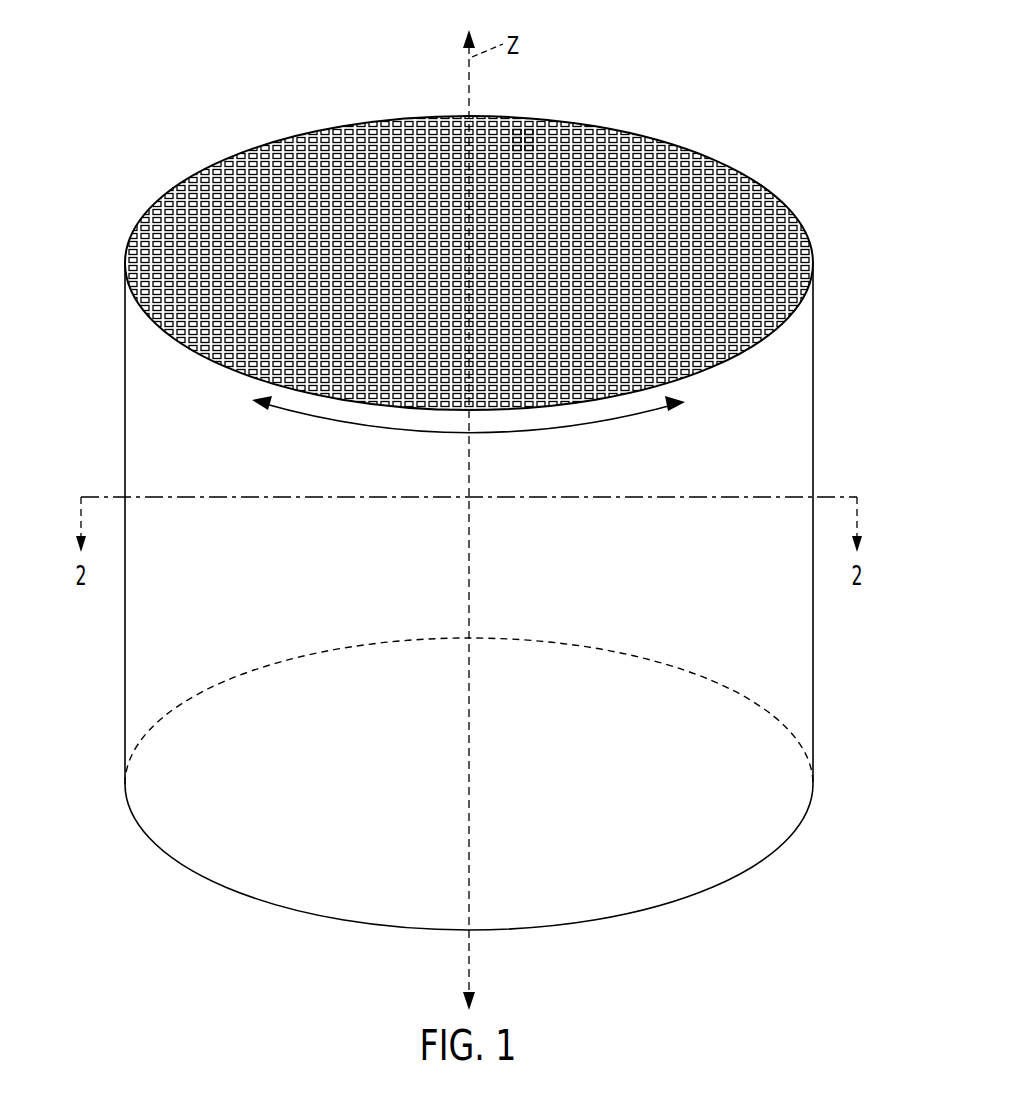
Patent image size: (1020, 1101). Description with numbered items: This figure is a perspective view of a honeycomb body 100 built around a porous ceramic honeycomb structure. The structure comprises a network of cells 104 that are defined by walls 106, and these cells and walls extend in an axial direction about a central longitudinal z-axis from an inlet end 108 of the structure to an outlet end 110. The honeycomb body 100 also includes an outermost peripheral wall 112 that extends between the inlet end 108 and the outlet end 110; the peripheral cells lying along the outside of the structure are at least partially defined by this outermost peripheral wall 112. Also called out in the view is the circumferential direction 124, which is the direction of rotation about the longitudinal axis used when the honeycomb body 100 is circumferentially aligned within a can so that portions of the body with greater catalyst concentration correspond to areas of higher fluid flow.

The honeycomb body 100 is at (828, 313).
The cells 104 is at (578, 138).
The walls 106 is at (523, 133).
The inlet end 108 is at (184, 180).
The outlet end 110 is at (202, 877).
The outermost peripheral wall 112 is at (125, 311).
The circumferential direction 124 is at (612, 420).